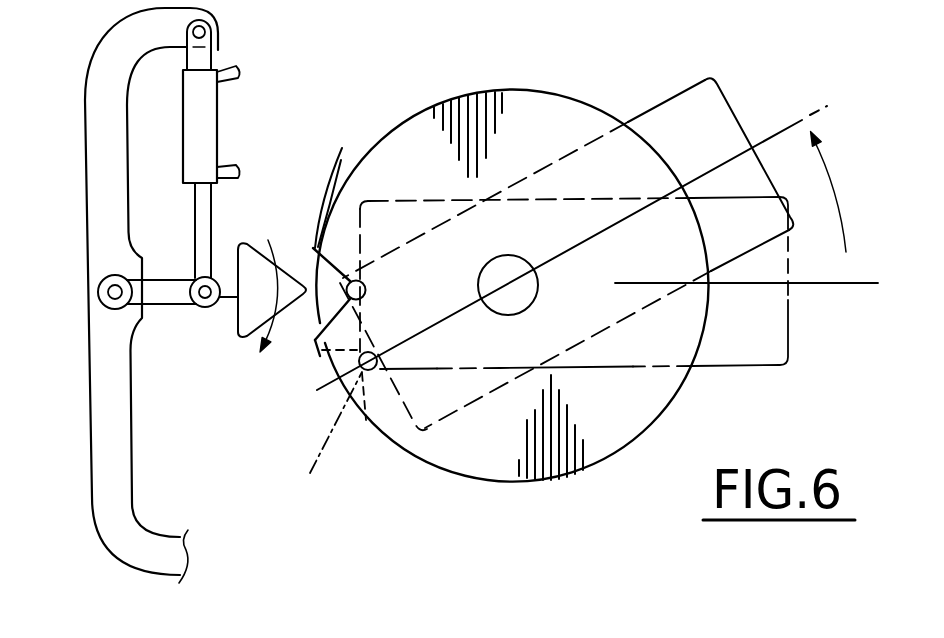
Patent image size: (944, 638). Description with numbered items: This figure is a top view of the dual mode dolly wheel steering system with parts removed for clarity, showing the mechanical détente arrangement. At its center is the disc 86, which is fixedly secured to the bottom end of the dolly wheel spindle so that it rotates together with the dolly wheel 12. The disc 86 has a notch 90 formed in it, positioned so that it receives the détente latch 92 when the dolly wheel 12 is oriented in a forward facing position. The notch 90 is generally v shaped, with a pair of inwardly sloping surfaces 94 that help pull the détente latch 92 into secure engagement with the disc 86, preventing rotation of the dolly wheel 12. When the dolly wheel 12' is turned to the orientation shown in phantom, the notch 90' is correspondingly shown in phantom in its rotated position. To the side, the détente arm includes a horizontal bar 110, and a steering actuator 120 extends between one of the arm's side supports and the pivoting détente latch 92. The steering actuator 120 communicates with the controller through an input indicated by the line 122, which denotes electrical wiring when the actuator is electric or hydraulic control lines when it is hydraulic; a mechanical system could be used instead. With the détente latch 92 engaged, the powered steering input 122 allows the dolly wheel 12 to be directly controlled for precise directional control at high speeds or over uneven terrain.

The dolly wheel 12 is at (619, 283).
The dolly wheel in phantom position 12' is at (581, 248).
The disc 86 is at (642, 413).
The notch 90 is at (316, 332).
The notch in phantom position 90' is at (333, 441).
The détente latch 92 is at (291, 252).
The inwardly sloping surfaces 94 is at (338, 177).
The horizontal bar 110 is at (123, 453).
The steering actuator 120 is at (209, 118).
The input line 122 is at (229, 66).